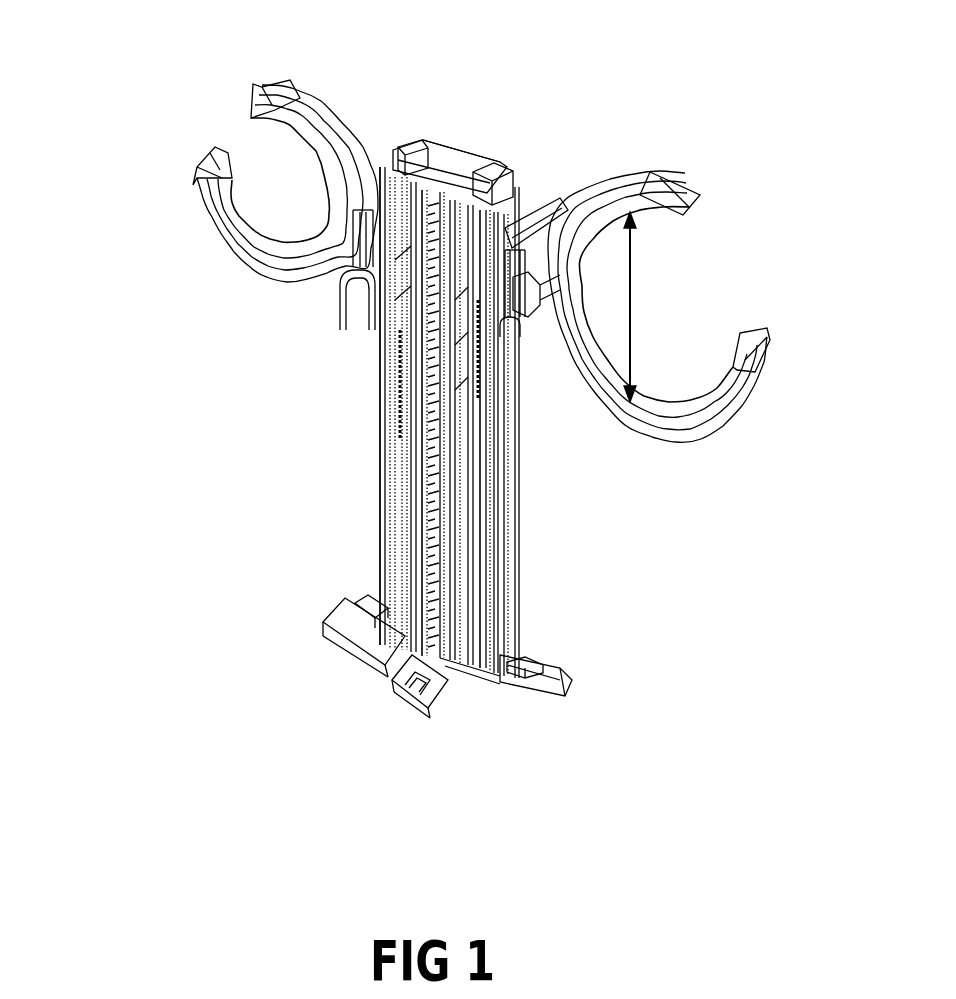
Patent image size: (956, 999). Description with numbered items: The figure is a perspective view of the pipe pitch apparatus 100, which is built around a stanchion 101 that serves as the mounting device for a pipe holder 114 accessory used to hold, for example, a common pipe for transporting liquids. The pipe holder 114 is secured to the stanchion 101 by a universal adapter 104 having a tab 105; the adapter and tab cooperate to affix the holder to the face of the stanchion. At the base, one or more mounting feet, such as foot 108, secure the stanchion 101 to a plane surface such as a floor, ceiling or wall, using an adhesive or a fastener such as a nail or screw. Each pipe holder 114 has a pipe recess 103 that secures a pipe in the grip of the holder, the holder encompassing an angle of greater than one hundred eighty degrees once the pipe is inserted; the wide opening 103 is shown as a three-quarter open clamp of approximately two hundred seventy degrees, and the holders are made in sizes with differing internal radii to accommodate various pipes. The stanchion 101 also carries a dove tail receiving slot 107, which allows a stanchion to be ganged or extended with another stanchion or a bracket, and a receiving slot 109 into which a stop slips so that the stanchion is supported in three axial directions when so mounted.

The pipe pitch apparatus 100 is at (182, 108).
The stanchion 101 is at (376, 428).
The pipe recess 103 is at (655, 322).
The universal adapter 104 is at (536, 220).
The tab 105 is at (392, 323).
The dove tail receiving slot 107 is at (458, 150).
The foot 108 is at (387, 684).
The receiving slot 109 is at (412, 695).
The pipe holder 114 is at (283, 84).